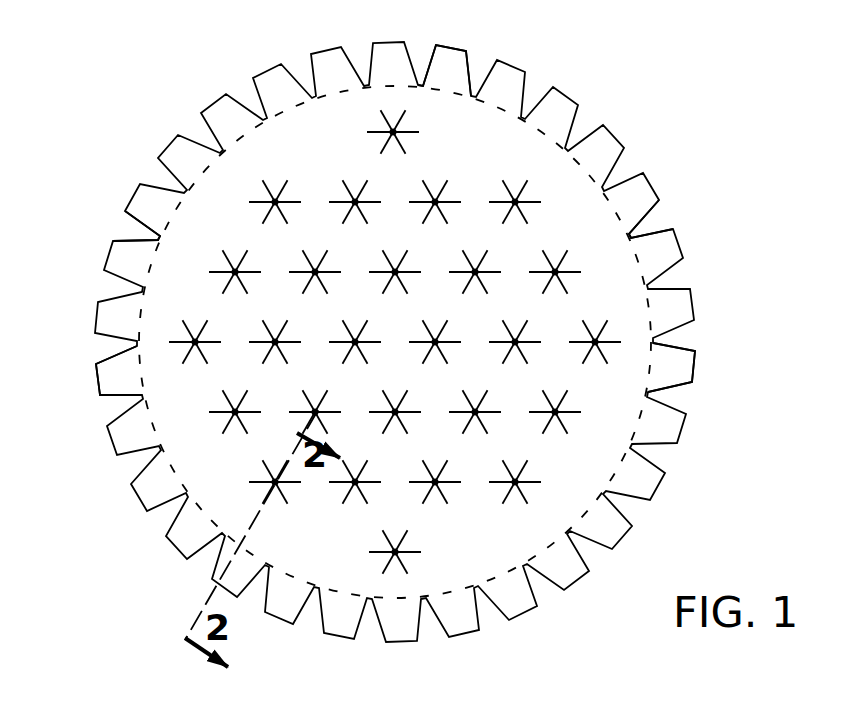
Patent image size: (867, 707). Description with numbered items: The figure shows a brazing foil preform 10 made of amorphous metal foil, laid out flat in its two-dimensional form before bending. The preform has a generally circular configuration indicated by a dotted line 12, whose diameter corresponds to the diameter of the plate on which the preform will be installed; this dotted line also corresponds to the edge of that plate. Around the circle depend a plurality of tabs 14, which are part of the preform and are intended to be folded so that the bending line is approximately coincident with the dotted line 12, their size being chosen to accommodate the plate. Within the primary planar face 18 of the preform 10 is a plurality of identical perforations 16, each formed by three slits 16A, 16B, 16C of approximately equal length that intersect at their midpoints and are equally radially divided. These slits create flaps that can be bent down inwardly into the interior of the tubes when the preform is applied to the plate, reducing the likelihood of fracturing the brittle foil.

The brazing foil preform 10 is at (707, 482).
The dotted line 12 is at (647, 253).
The tabs 14 is at (452, 60).
The perforations 16 is at (583, 253).
The slit 16A is at (412, 120).
The slit 16B is at (377, 135).
The slit 16C is at (378, 122).
The primary planar face 18 is at (475, 558).